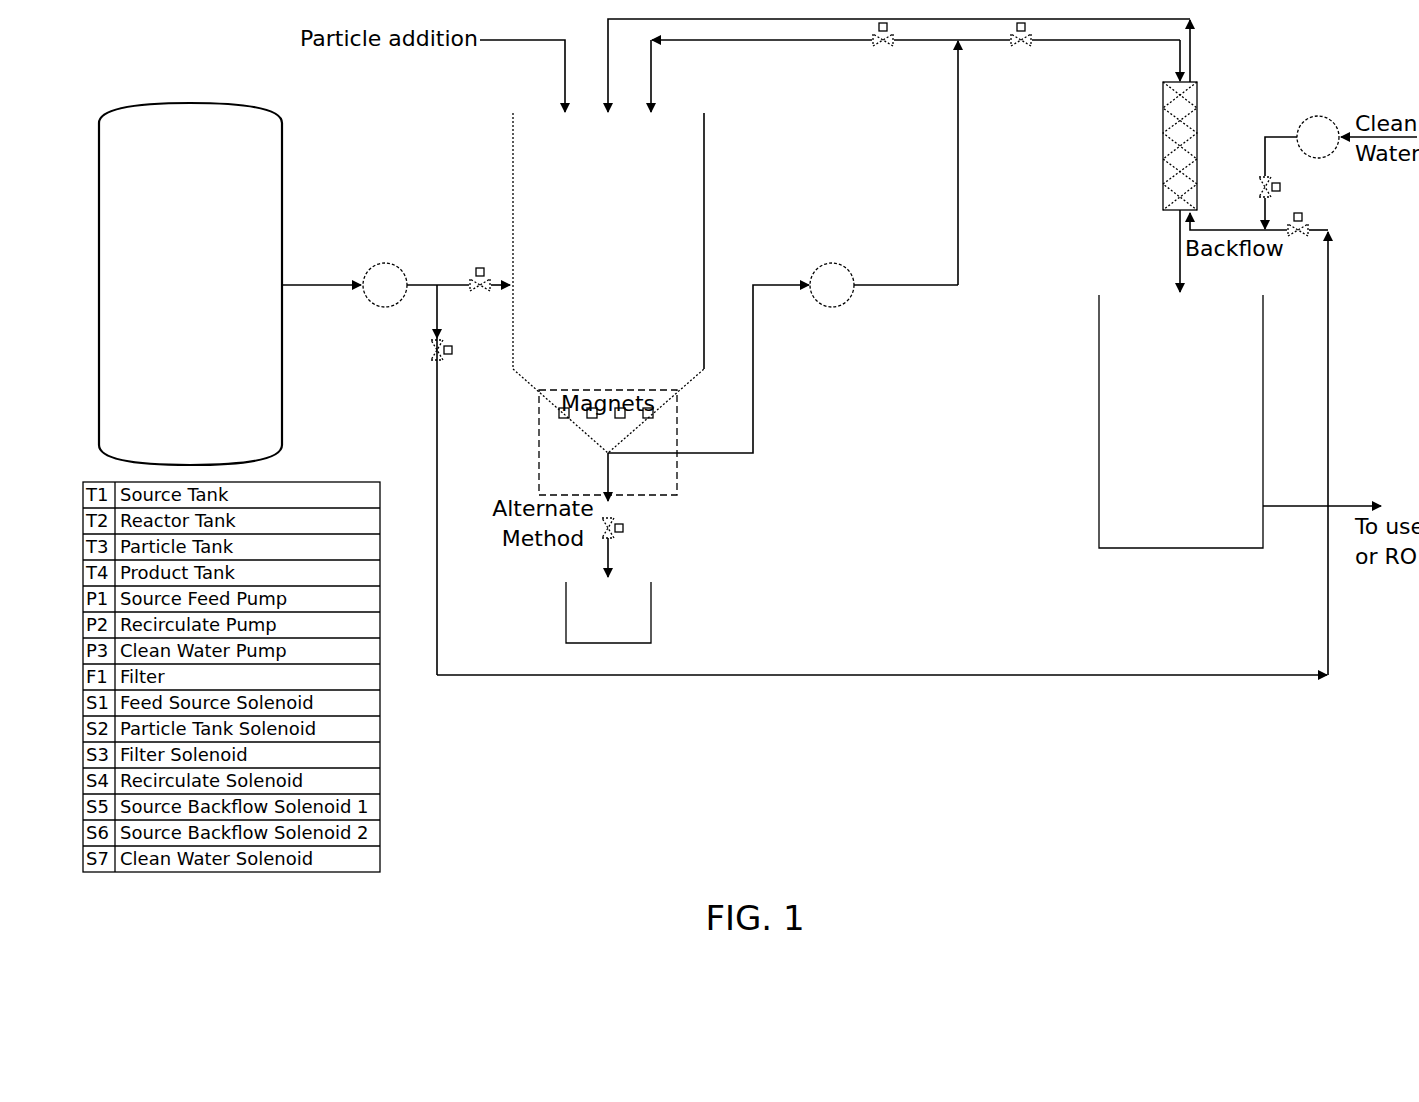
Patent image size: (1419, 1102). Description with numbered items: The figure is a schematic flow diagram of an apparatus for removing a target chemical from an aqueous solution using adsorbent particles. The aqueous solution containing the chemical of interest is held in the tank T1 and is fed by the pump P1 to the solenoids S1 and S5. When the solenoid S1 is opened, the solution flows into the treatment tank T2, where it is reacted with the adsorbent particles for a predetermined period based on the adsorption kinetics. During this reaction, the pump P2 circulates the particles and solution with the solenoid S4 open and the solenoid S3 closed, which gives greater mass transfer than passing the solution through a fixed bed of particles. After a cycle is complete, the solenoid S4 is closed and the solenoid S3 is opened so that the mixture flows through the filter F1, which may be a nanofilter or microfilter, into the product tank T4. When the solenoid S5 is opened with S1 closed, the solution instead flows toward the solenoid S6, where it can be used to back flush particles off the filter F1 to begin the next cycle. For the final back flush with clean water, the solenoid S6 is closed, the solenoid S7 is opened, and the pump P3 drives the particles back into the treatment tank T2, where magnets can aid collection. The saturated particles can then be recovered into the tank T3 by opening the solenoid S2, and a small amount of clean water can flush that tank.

The tank T1 is at (183, 101).
The treatment tank T2 is at (705, 186).
The tank T3 is at (652, 598).
The product tank T4 is at (1099, 404).
The pump P1 is at (385, 262).
The pump P2 is at (836, 308).
The pump P3 is at (1315, 116).
The filter F1 is at (1163, 145).
The solenoid S1 is at (480, 268).
The solenoid S2 is at (623, 528).
The solenoid S3 is at (1028, 48).
The solenoid S4 is at (890, 48).
The solenoid S5 is at (432, 361).
The solenoid S6 is at (1298, 240).
The solenoid S7 is at (1262, 194).